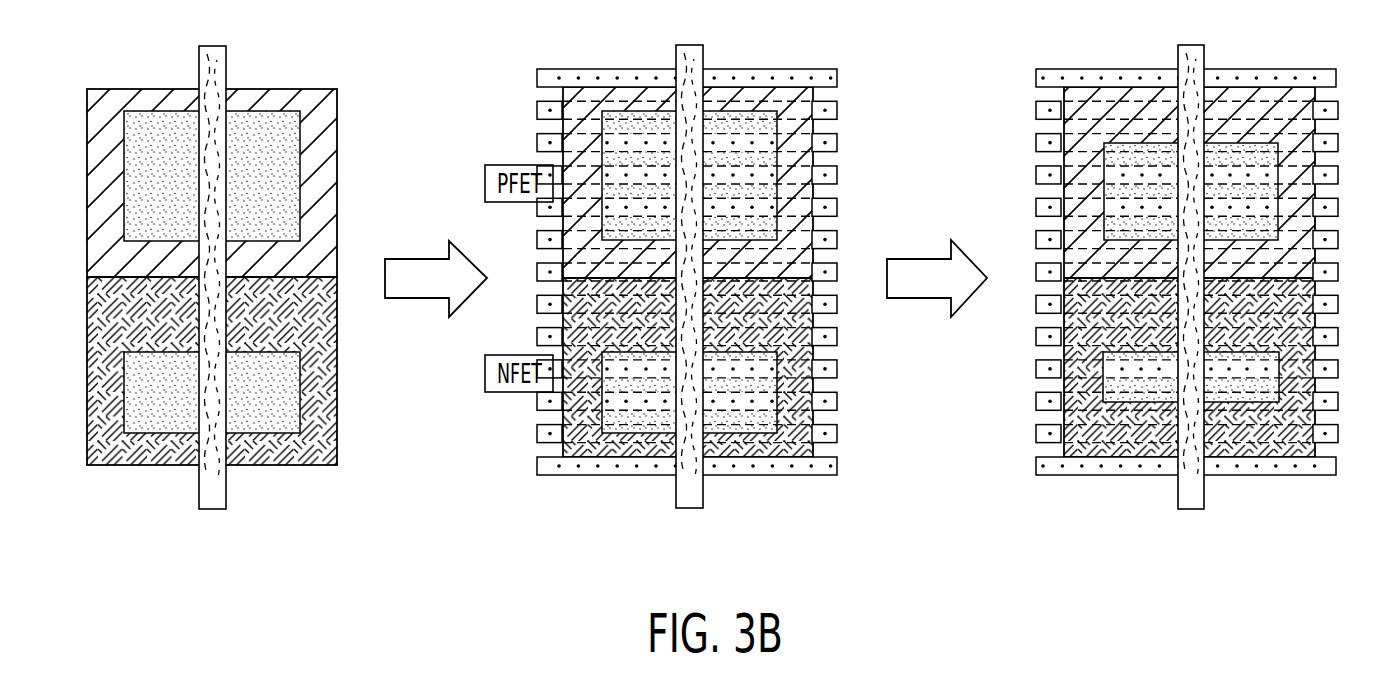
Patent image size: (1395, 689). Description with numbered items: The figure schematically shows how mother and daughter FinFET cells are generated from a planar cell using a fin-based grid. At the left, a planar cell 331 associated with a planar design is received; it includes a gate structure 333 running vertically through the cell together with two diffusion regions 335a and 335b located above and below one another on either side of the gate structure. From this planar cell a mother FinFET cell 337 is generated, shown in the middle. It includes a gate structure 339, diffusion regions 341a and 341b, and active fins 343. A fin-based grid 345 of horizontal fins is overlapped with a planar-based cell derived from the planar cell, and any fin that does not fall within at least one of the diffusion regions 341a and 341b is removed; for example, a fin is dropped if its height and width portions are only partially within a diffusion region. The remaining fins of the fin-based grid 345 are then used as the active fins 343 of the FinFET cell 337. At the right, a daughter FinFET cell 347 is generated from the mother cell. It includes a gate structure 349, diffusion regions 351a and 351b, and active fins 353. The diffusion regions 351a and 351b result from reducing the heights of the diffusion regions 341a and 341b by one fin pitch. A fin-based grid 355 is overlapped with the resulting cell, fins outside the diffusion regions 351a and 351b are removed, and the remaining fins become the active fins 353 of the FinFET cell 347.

The planar cell 331 is at (102, 464).
The gate structure 333 is at (213, 497).
The diffusion region 335a is at (273, 116).
The diffusion region 335b is at (287, 427).
The FinFET cell 337 is at (592, 460).
The gate structure 339 is at (690, 503).
The diffusion region 341a is at (740, 116).
The diffusion region 341b is at (763, 420).
The active fins 343 is at (773, 406).
The fin-based grid 345 is at (838, 477).
The FinFET cell 347 is at (1085, 465).
The gate structure 349 is at (1190, 508).
The diffusion region 351a is at (1232, 148).
The diffusion region 351b is at (1272, 393).
The active fins 353 is at (1298, 360).
The fin-based grid 355 is at (1338, 477).